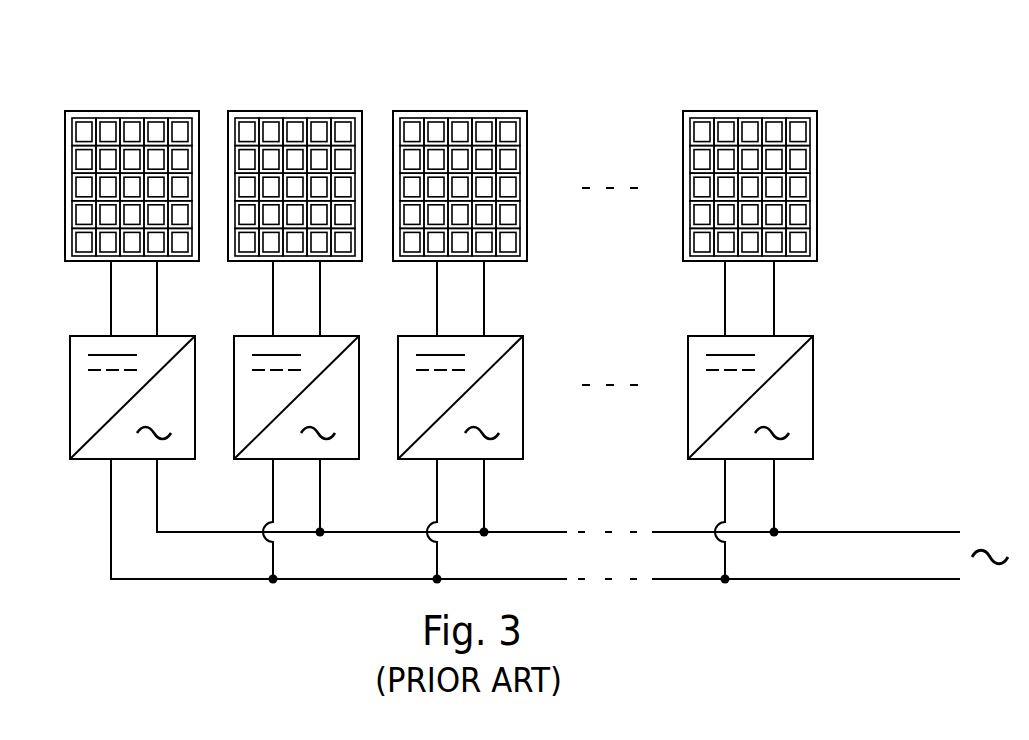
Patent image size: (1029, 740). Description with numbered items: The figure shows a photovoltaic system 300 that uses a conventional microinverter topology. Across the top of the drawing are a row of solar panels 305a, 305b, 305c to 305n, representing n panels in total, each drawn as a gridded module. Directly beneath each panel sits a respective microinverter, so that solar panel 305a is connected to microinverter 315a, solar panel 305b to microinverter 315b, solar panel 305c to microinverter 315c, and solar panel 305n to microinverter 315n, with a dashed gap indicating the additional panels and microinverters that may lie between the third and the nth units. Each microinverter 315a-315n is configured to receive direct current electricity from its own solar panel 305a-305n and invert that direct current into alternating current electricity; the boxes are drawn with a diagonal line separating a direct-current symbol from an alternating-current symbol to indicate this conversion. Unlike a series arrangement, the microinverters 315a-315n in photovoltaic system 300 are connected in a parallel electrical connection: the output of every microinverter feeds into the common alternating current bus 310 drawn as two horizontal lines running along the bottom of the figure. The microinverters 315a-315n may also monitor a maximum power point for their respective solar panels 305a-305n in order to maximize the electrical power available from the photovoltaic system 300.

The photovoltaic system 300 is at (92, 38).
The solar panel 305a is at (127, 111).
The solar panel 305b is at (291, 111).
The solar panel 305c is at (472, 111).
The solar panel 305n is at (767, 111).
The microinverter 315a is at (78, 336).
The microinverter 315b is at (253, 336).
The microinverter 315c is at (416, 336).
The microinverter 315n is at (801, 335).
The alternating current bus 310 is at (198, 579).